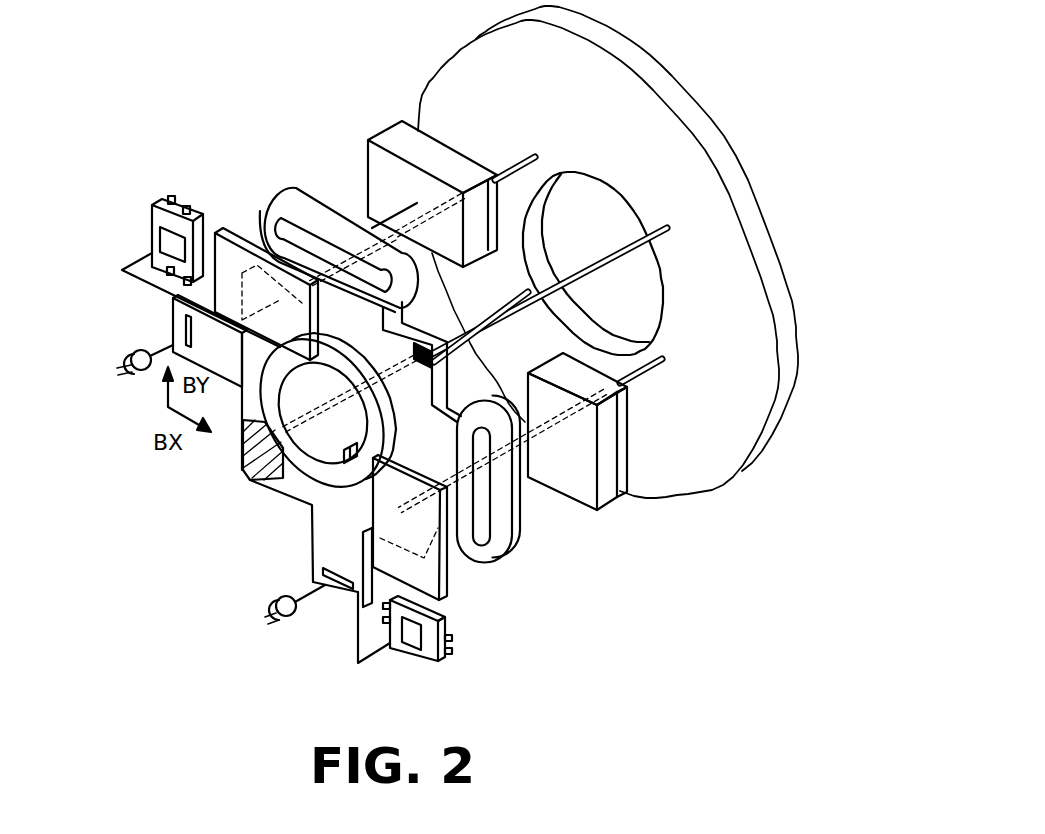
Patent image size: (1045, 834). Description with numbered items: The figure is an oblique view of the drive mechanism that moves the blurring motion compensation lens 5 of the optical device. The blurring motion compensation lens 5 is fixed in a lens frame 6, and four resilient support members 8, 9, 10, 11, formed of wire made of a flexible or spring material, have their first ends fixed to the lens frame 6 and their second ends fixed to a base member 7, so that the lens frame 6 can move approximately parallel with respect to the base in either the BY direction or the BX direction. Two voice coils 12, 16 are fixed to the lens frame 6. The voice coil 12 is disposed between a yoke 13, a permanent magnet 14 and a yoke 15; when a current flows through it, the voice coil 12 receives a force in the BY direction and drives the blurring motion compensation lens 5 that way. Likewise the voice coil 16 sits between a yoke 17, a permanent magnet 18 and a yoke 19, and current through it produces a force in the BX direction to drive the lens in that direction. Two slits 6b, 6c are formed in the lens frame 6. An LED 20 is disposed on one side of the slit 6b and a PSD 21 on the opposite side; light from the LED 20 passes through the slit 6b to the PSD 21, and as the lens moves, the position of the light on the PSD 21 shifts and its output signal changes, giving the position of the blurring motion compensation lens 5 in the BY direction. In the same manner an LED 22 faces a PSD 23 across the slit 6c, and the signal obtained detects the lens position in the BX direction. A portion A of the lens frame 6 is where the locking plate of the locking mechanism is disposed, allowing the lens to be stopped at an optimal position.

The blurring motion compensation lens 5 is at (313, 458).
The lens frame 6 is at (245, 410).
The slit 6b is at (348, 596).
The slit 6c is at (183, 327).
The base member 7 is at (768, 262).
The resilient support member 8 is at (660, 366).
The resilient support member 9 is at (670, 233).
The resilient support member 10 is at (528, 152).
The resilient support member 11 is at (512, 296).
The voice coil 12 is at (280, 197).
The yoke 13 is at (233, 236).
The permanent magnet 14 is at (369, 152).
The yoke 15 is at (418, 127).
The voice coil 16 is at (513, 550).
The yoke 17 is at (447, 580).
The permanent magnet 18 is at (604, 502).
The yoke 19 is at (626, 493).
The LED 20 is at (292, 623).
The PSD 21 is at (428, 664).
The LED 22 is at (127, 354).
The PSD 23 is at (158, 220).
The portion of the lens frame A is at (255, 466).